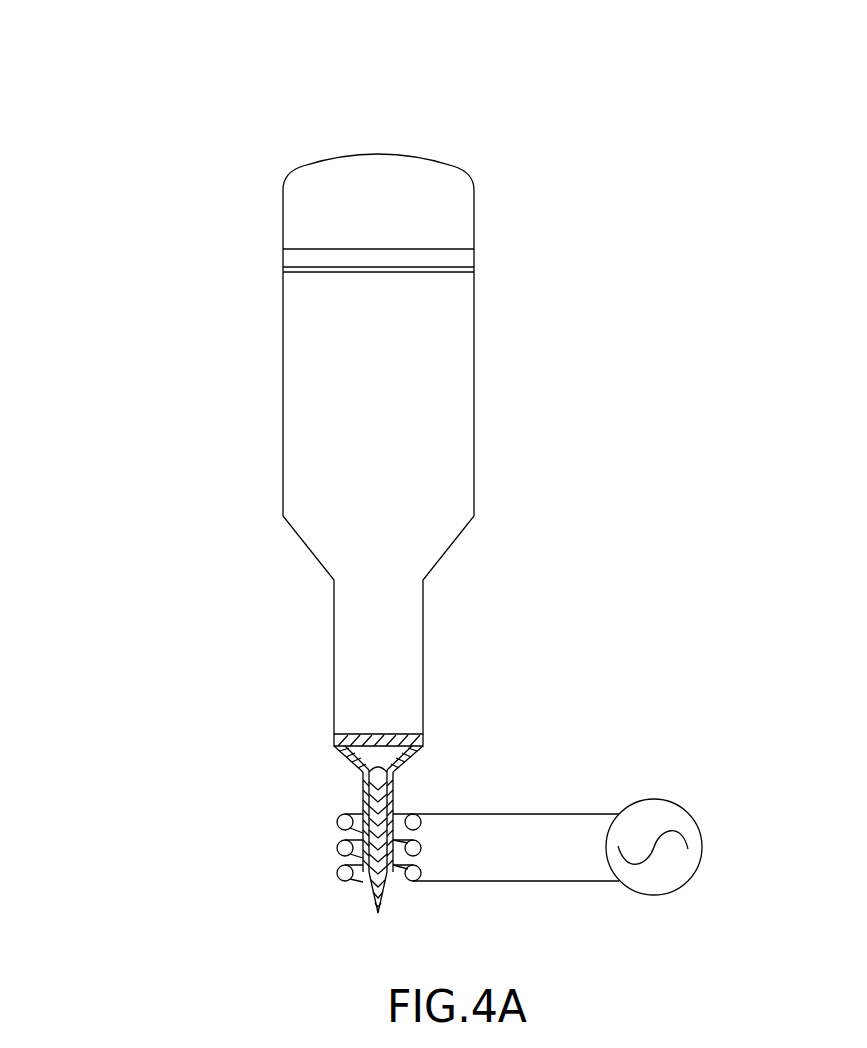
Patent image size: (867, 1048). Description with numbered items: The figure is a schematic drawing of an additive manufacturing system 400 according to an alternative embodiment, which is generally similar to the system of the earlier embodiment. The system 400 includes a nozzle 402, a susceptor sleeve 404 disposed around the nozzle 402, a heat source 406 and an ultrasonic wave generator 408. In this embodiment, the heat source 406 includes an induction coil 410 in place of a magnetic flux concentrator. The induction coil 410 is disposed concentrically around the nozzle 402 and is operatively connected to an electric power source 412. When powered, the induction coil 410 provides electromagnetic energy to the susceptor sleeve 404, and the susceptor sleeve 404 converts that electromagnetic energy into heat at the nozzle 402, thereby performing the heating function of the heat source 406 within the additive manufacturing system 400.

The additive manufacturing system 400 is at (113, 121).
The nozzle 402 is at (383, 888).
The susceptor sleeve 404 is at (363, 795).
The heat source 406 is at (576, 772).
The ultrasonic wave generator 408 is at (222, 373).
The induction coil 410 is at (345, 881).
The electric power source 412 is at (672, 800).